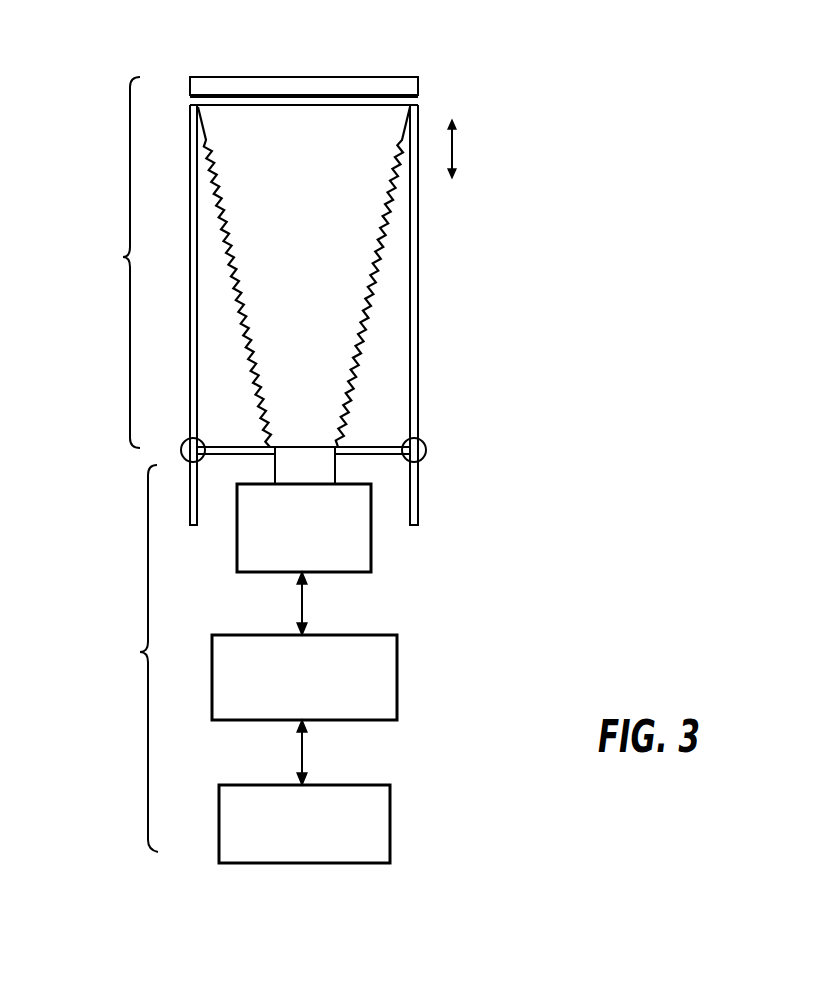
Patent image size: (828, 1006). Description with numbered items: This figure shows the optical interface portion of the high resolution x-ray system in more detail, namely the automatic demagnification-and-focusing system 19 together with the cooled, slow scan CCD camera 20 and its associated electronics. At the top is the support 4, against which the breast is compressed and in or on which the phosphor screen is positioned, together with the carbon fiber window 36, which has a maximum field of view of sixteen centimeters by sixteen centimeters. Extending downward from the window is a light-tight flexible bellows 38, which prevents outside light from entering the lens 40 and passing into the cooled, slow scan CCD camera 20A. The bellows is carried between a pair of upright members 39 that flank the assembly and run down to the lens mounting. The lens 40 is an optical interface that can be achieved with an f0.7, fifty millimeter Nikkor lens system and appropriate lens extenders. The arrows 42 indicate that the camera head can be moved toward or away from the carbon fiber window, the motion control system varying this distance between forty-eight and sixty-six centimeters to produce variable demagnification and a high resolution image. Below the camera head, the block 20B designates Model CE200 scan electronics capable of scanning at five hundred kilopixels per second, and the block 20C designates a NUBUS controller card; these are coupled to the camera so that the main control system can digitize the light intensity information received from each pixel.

The support 4 is at (418, 101).
The automatic demagnification-and-focusing system 19 is at (123, 257).
The cooled, slow scan CCD camera 20 is at (140, 652).
The cooled, slow scan CCD camera 20A is at (371, 553).
The scan electronics 20B is at (397, 676).
The NUBUS controller card 20C is at (390, 816).
The carbon fiber window 36 is at (387, 77).
The light-tight flexible bellows 38 is at (355, 368).
The support posts 39 is at (190, 352).
The lens 40 is at (275, 470).
The arrows 42 is at (452, 147).